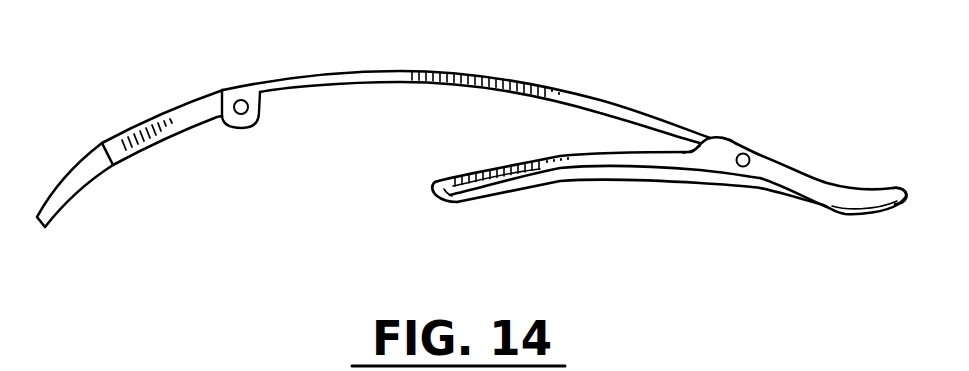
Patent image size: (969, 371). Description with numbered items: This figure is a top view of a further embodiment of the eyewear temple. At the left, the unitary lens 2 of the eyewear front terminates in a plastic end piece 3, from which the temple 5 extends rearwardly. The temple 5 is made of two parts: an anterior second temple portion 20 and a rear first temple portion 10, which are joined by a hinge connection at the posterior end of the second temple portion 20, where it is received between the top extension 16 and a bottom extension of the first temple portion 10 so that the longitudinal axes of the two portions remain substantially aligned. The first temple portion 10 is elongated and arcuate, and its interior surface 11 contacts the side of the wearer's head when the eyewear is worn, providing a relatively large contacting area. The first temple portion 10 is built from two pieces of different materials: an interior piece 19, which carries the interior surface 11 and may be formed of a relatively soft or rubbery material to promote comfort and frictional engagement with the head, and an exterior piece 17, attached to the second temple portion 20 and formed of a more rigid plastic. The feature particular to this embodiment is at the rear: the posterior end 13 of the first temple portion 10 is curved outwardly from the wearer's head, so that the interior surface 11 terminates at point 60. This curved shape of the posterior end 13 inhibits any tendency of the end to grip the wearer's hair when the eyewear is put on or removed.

The unitary lens 2 is at (98, 173).
The plastic end piece 3 is at (163, 112).
The temple 5 is at (388, 60).
The second temple portion 20 is at (507, 78).
The first temple portion 10 is at (763, 170).
The top extension 16 is at (717, 140).
The interior surface 11 is at (490, 200).
The exterior piece 17 is at (545, 163).
The interior piece 19 is at (633, 183).
The point 60 is at (830, 207).
The posterior end 13 is at (893, 180).